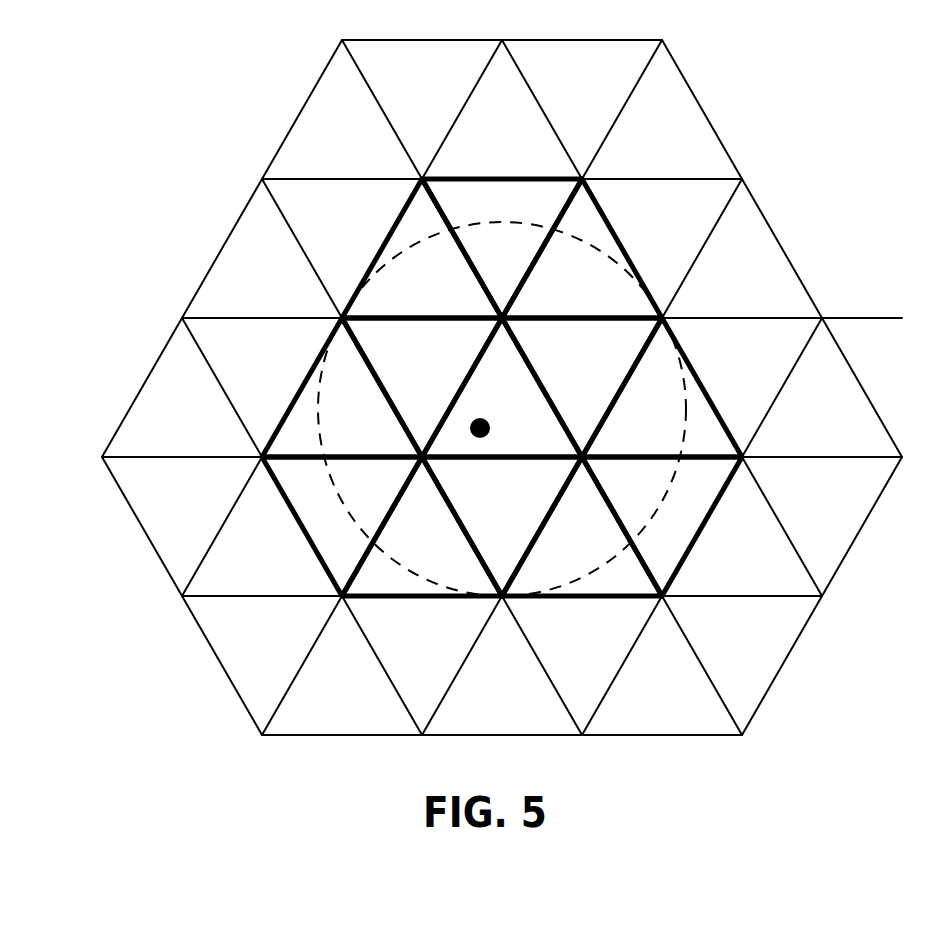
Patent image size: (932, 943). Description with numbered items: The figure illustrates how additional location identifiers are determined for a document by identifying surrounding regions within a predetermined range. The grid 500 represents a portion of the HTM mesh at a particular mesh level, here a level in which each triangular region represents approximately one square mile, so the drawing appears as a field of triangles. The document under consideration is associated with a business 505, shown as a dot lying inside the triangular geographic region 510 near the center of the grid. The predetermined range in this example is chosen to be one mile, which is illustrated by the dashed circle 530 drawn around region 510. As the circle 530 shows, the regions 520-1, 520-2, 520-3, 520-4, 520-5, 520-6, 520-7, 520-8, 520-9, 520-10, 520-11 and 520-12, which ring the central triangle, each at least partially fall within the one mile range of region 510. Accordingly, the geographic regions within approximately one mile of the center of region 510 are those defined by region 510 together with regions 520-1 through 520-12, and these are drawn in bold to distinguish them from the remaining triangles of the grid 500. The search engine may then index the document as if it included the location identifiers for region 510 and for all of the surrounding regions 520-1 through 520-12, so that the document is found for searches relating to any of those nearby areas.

The grid 500 is at (859, 128).
The business 505 is at (490, 430).
The triangular geographic region 510 is at (502, 387).
The region 520-1 is at (582, 387).
The region 520-2 is at (662, 387).
The region 520-3 is at (662, 526).
The region 520-4 is at (582, 526).
The region 520-5 is at (502, 526).
The region 520-6 is at (422, 526).
The region 520-7 is at (342, 526).
The region 520-8 is at (342, 387).
The region 520-9 is at (422, 387).
The region 520-10 is at (422, 248).
The region 520-11 is at (502, 248).
The region 520-12 is at (582, 248).
The circle 530 is at (688, 375).